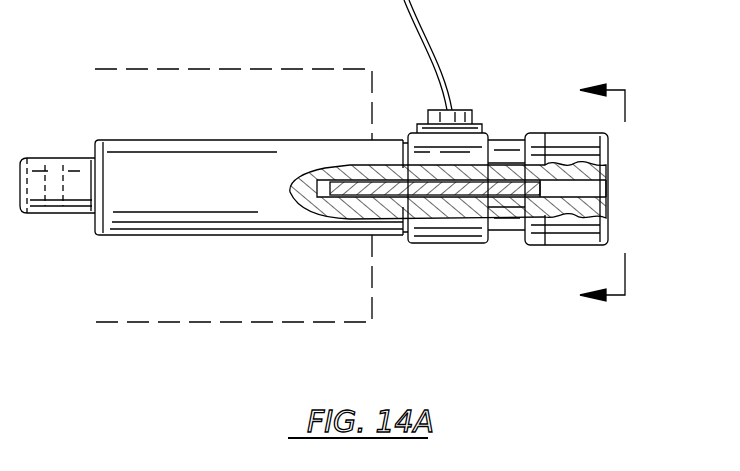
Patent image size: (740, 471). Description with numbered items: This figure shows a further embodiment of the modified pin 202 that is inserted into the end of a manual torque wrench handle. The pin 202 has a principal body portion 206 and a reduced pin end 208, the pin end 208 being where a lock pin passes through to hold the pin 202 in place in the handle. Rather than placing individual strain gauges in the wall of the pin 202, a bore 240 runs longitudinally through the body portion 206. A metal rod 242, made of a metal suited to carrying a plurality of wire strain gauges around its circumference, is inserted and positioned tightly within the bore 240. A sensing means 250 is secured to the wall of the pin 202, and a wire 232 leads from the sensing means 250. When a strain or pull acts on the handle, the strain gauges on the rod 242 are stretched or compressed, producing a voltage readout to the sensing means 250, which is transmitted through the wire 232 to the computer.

The modified pin 202 is at (202, 247).
The principal body portion 206 is at (184, 175).
The reduced pin end 208 is at (55, 163).
The wire 232 is at (428, 33).
The bore 240 is at (593, 187).
The metal rod 242 is at (513, 160).
The sensing means 250 is at (447, 110).